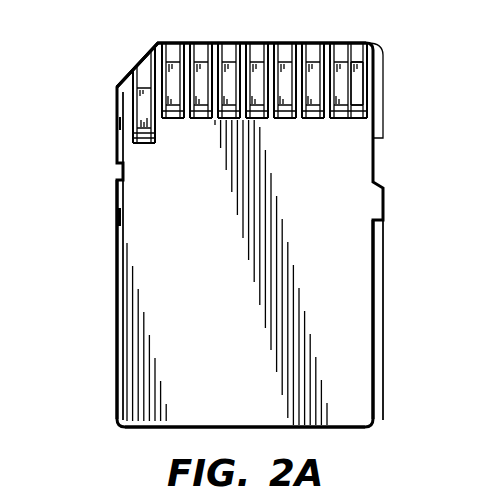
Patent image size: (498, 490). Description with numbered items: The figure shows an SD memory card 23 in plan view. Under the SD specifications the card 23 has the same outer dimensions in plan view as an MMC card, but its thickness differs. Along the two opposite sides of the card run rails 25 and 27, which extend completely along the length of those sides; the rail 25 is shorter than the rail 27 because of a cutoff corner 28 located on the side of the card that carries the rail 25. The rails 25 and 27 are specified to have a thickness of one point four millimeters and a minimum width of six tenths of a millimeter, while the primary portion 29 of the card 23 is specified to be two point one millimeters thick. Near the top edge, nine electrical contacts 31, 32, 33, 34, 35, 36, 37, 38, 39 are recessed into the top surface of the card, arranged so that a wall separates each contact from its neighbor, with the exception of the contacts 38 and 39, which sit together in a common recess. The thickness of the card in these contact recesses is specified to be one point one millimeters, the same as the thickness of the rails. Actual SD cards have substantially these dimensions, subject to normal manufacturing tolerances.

The SD memory card 23 is at (100, 265).
The rail 25 is at (119, 385).
The rail 27 is at (380, 385).
The cutoff corner 28 is at (134, 70).
The primary portion 29 is at (342, 415).
The electrical contact 31 is at (138, 118).
The electrical contact 32 is at (139, 62).
The electrical contact 33 is at (200, 64).
The electrical contact 34 is at (233, 62).
The electrical contact 35 is at (253, 62).
The electrical contact 36 is at (283, 62).
The electrical contact 37 is at (340, 67).
The electrical contact 38 is at (357, 66).
The electrical contact 39 is at (358, 93).